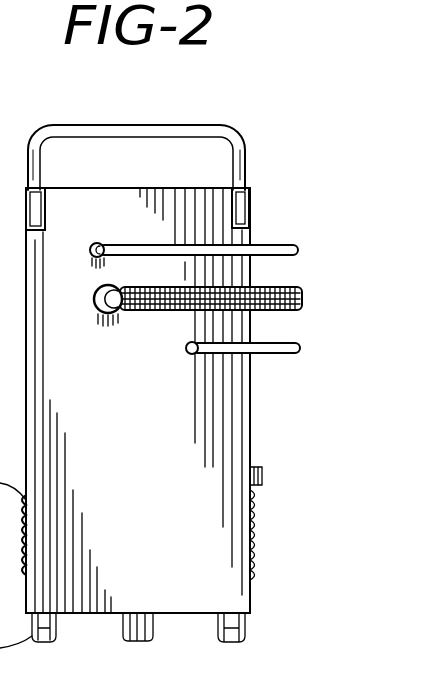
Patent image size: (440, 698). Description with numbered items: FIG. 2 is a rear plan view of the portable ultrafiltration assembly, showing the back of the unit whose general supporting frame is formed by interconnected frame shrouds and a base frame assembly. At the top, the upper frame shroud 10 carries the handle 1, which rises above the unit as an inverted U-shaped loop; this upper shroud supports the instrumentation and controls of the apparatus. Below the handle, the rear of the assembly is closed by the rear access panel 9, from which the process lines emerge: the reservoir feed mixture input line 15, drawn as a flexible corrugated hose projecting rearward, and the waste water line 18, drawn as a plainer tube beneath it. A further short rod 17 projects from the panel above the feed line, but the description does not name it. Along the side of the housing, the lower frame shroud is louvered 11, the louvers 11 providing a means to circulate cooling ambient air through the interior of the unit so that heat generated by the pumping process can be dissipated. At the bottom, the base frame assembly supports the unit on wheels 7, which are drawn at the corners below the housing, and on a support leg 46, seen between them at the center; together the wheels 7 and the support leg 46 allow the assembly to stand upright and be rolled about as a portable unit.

The handle 1 is at (190, 128).
The wheels 7 is at (228, 642).
The rear access panel 9 is at (142, 466).
The upper frame shroud 10 is at (127, 230).
The louvers 11 is at (258, 492).
The reservoir feed mixture input line 15 is at (283, 285).
The upper rod 17 is at (270, 248).
The waste water line 18 is at (275, 357).
The support leg 46 is at (150, 642).